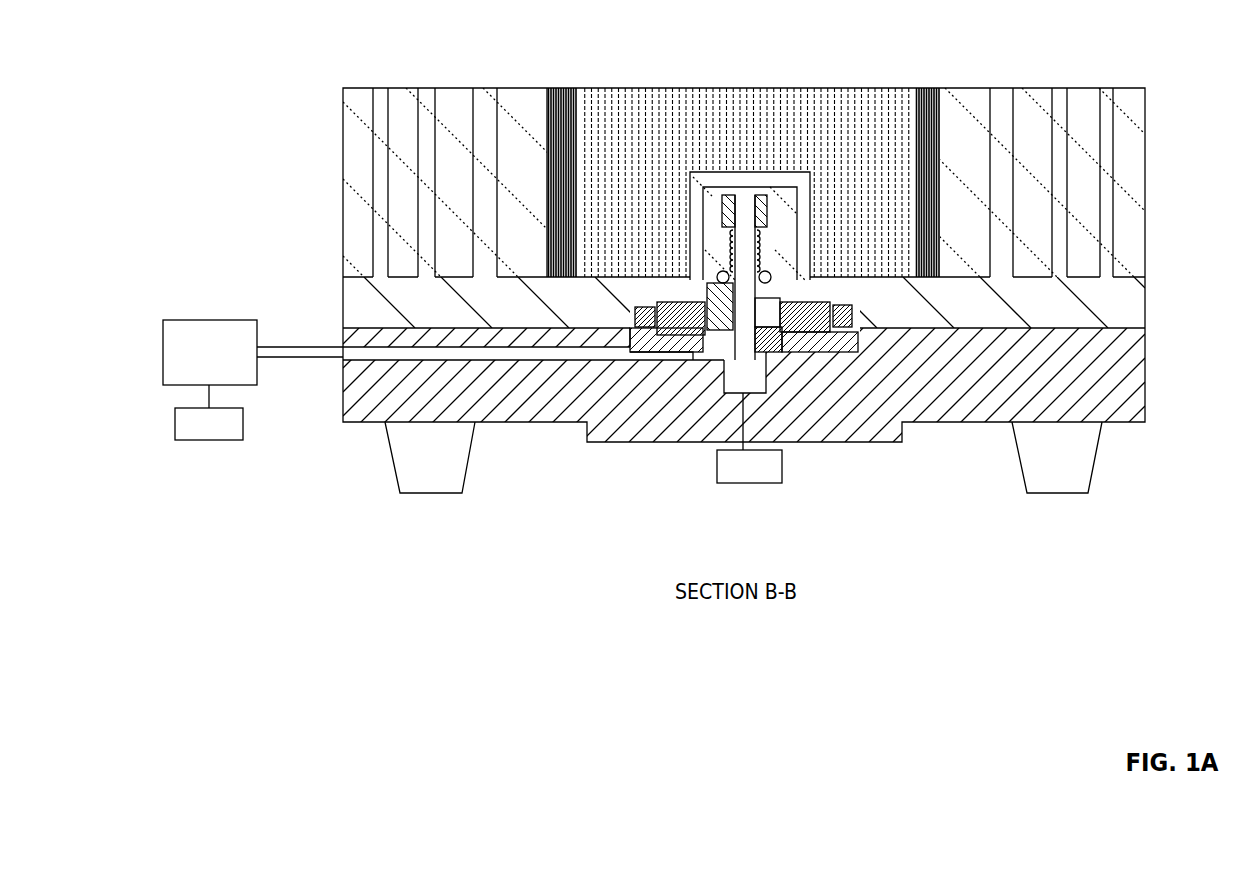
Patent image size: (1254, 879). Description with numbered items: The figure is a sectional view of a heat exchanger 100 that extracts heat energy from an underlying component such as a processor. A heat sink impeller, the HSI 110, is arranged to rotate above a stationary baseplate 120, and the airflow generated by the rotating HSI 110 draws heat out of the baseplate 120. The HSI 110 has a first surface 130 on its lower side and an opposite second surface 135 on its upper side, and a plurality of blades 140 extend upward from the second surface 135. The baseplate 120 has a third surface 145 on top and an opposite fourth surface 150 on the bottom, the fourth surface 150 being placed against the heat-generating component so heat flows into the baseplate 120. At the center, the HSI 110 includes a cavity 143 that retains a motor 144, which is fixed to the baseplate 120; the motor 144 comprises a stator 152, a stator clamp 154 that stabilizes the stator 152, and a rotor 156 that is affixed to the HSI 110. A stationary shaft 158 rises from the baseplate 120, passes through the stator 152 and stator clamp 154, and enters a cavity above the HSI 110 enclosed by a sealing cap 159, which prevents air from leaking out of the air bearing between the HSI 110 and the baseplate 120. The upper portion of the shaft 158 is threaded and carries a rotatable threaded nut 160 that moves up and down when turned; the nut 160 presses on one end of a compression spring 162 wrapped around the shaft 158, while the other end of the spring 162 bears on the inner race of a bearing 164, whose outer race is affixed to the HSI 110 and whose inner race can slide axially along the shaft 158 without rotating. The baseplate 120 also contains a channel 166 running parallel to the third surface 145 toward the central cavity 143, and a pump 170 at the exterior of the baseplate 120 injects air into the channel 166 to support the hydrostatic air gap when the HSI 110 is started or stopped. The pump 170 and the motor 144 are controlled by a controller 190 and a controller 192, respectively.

The heat exchanger 100 is at (583, 47).
The HSI 110 is at (360, 303).
The baseplate 120 is at (370, 397).
The first surface 130 is at (1000, 330).
The second surface 135 is at (353, 271).
The blades 140 is at (343, 118).
The cavity 143 is at (656, 300).
The motor 144 is at (750, 372).
The third surface 145 is at (486, 333).
The fourth surface 150 is at (922, 423).
The stator 152 is at (800, 325).
The stator clamp 154 is at (768, 313).
The rotor 156 is at (640, 323).
The stationary shaft 158 is at (745, 215).
The sealing cap 159 is at (722, 178).
The threaded nut 160 is at (757, 218).
The compression spring 162 is at (766, 246).
The bearing 164 is at (720, 276).
The channel 166 is at (482, 352).
The pump 170 is at (213, 320).
The controller 190 is at (209, 412).
The controller 192 is at (749, 438).